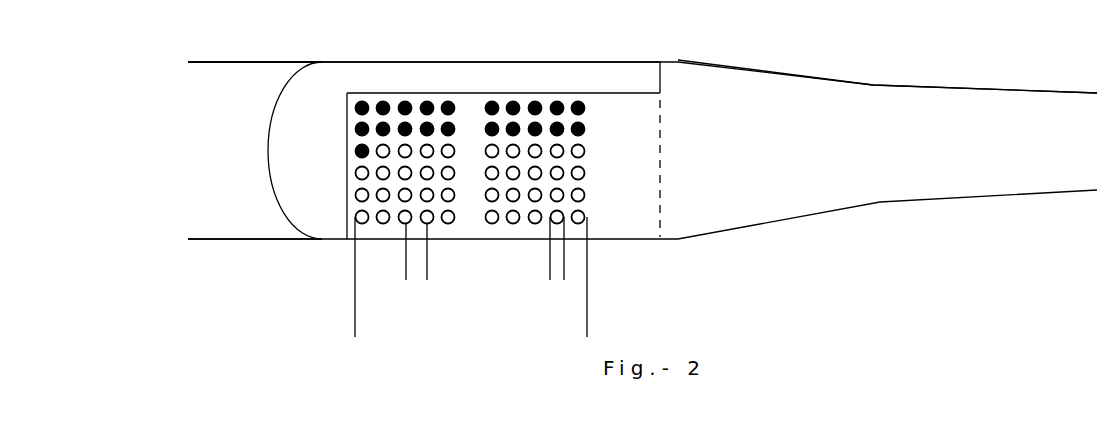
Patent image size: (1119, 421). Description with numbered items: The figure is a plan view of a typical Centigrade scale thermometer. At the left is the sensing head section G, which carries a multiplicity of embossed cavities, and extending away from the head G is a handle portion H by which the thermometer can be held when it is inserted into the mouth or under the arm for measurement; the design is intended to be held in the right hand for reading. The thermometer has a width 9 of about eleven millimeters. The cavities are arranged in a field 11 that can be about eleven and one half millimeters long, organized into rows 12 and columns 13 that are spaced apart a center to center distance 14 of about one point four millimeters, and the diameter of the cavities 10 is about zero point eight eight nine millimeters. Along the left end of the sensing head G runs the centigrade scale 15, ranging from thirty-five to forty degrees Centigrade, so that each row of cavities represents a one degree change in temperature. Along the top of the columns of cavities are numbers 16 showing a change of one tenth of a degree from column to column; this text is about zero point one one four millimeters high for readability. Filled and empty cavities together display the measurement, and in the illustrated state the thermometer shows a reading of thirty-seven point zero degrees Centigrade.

The width 9 is at (205, 62).
The diameter of the cavities 10 is at (574, 263).
The field 11 is at (355, 319).
The rows 12 is at (585, 127).
The columns 13 is at (492, 224).
The center to center distance 14 is at (437, 263).
The centigrade scale 15 is at (328, 98).
The numbers 16 is at (588, 78).
The sensing head section G is at (471, 60).
The handle portion H is at (922, 86).